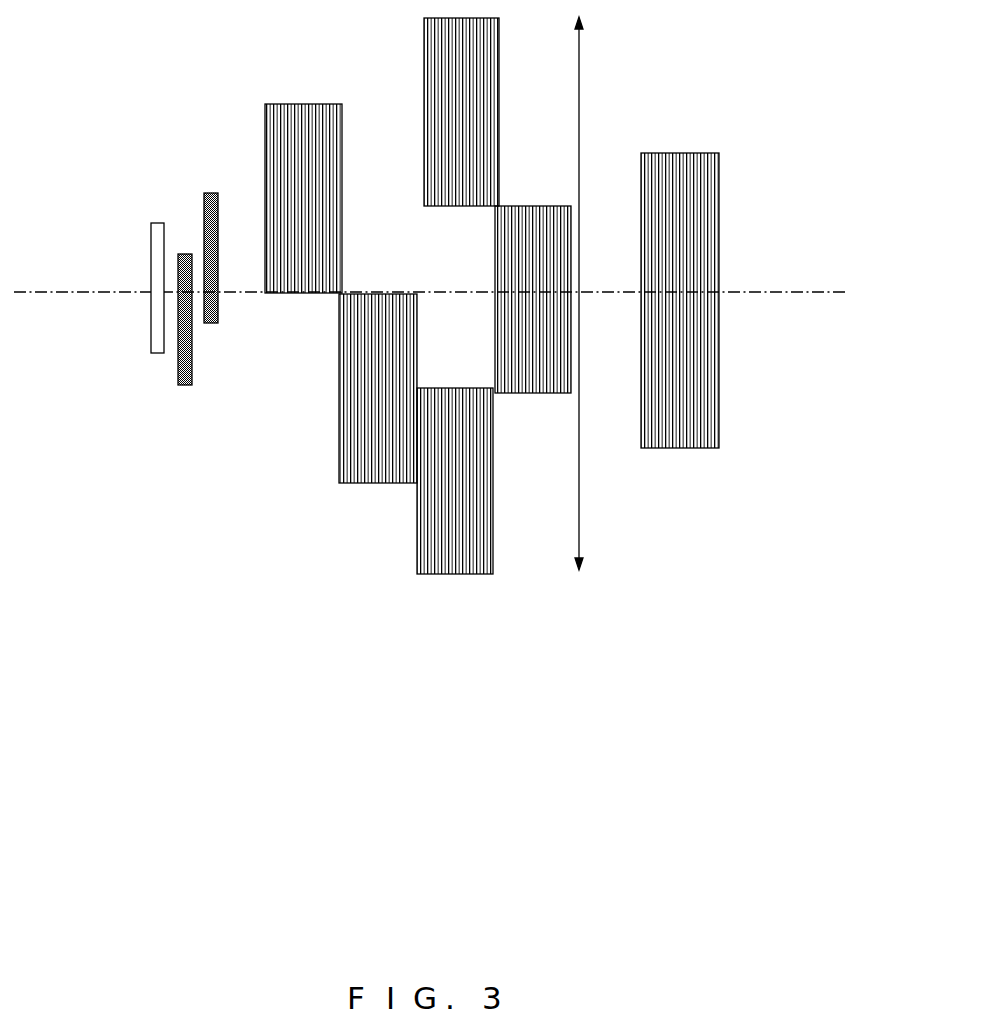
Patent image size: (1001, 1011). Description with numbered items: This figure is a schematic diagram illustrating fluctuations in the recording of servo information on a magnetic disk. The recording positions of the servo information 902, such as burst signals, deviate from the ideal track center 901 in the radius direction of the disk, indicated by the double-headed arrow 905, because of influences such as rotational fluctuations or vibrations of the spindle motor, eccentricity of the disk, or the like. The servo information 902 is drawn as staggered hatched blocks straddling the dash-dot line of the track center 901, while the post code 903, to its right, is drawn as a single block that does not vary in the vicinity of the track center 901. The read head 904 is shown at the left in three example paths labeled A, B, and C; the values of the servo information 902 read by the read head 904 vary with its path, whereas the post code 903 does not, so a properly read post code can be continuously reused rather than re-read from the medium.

The track center 901 is at (812, 296).
The servo information 902 is at (603, 553).
The post code 903 is at (781, 555).
The read head 904 is at (152, 222).
The radius direction 905 is at (579, 72).